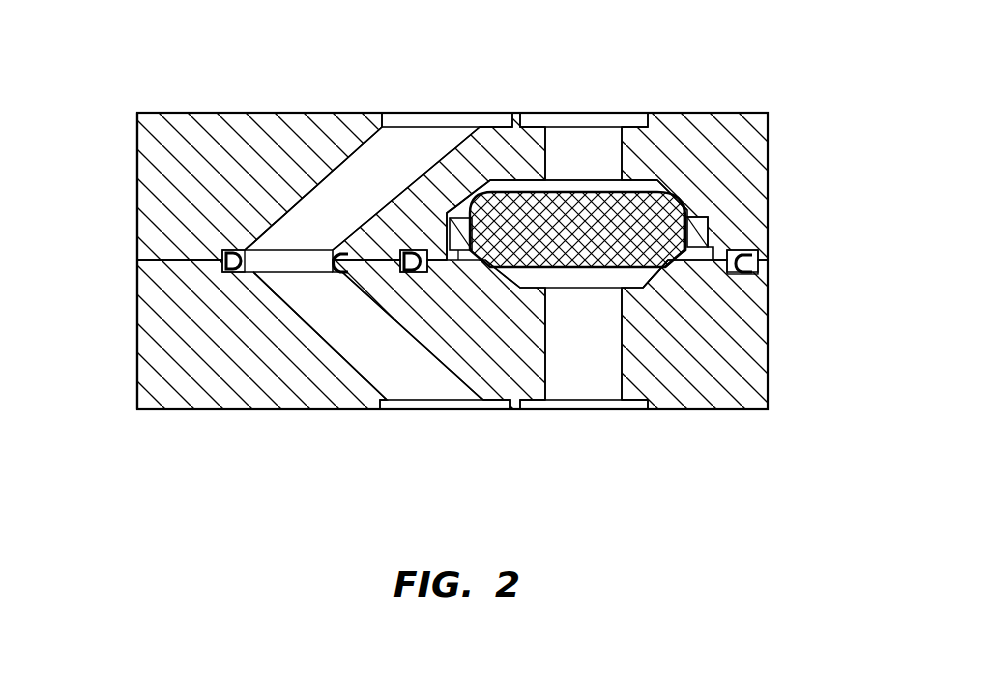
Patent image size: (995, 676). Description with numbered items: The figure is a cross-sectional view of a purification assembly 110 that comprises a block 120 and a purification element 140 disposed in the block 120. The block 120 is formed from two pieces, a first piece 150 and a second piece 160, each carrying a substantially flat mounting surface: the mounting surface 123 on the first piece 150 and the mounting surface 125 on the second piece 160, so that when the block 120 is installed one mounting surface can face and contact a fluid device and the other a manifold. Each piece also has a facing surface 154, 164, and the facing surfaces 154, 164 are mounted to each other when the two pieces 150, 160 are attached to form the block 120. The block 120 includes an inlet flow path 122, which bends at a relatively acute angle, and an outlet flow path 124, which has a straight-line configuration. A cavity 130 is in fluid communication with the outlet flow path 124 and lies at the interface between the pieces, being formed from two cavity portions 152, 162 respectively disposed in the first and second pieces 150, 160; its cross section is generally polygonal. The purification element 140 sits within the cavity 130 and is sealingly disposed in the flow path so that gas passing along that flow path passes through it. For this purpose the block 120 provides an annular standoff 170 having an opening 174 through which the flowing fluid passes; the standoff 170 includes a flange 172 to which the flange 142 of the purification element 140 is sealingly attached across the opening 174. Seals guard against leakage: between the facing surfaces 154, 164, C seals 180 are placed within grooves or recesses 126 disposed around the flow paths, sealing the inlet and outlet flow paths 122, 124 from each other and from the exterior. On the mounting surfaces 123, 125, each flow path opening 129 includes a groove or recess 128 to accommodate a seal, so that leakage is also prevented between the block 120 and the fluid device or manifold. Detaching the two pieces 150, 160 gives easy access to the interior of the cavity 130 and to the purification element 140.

The purification assembly 110 is at (765, 82).
The block 120 is at (157, 200).
The inlet flow path 122 is at (576, 137).
The mounting surface 123 is at (204, 110).
The outlet flow path 124 is at (428, 135).
The mounting surface 125 is at (731, 413).
The groove or recess 126 is at (745, 255).
The groove or recess 128 is at (397, 120).
The flow path opening 129 is at (459, 140).
The cavity 130 is at (662, 183).
The purification element 140 is at (641, 205).
The flange 142 is at (700, 222).
The first piece 150 is at (153, 137).
The cavity portion 152 is at (661, 190).
The facing surface 154 is at (162, 264).
The second piece 160 is at (233, 409).
The cavity portion 162 is at (568, 292).
The facing surface 164 is at (189, 256).
The annular standoff 170 is at (695, 265).
The flange 172 is at (712, 235).
The opening 174 is at (688, 275).
The C seal 180 is at (758, 265).